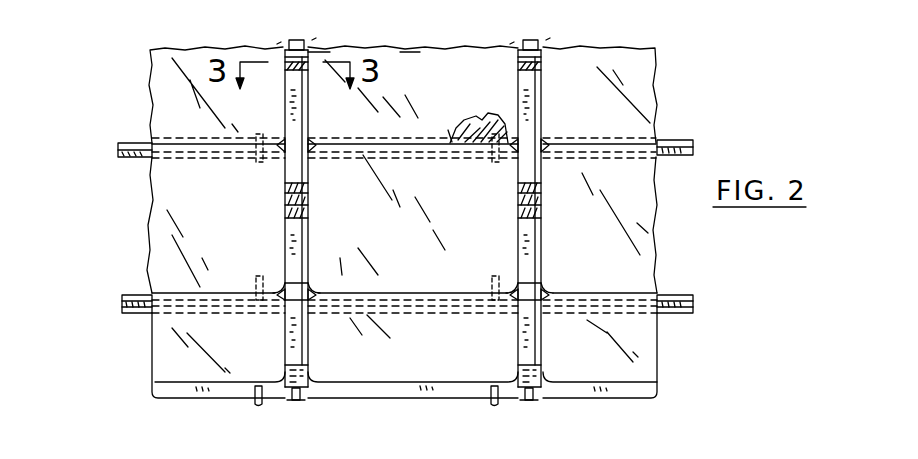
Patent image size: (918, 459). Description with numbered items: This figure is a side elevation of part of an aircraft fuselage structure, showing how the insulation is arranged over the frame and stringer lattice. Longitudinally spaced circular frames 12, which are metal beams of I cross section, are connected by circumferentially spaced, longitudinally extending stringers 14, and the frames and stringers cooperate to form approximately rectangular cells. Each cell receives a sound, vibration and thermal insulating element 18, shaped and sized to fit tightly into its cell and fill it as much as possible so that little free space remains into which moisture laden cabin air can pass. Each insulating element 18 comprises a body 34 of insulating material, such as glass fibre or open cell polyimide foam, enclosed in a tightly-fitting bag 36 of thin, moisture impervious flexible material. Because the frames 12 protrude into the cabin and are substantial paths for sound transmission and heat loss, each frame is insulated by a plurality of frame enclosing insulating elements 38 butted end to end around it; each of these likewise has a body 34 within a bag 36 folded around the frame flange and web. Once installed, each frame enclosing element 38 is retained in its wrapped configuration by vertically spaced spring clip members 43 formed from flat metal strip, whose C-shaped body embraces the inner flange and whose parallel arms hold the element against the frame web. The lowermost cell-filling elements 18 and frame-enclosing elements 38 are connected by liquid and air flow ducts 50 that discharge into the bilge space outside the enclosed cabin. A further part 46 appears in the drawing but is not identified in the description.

The circular frame 12 is at (296, 40).
The stringer 14 is at (132, 143).
The insulating element 18 is at (183, 58).
The body 34 is at (452, 127).
The bag 36 is at (456, 63).
The frame enclosing insulating element 38 is at (547, 109).
The spring clip member 43 is at (311, 218).
The fastener 46 is at (479, 125).
The liquid and air flow duct 50 is at (284, 398).